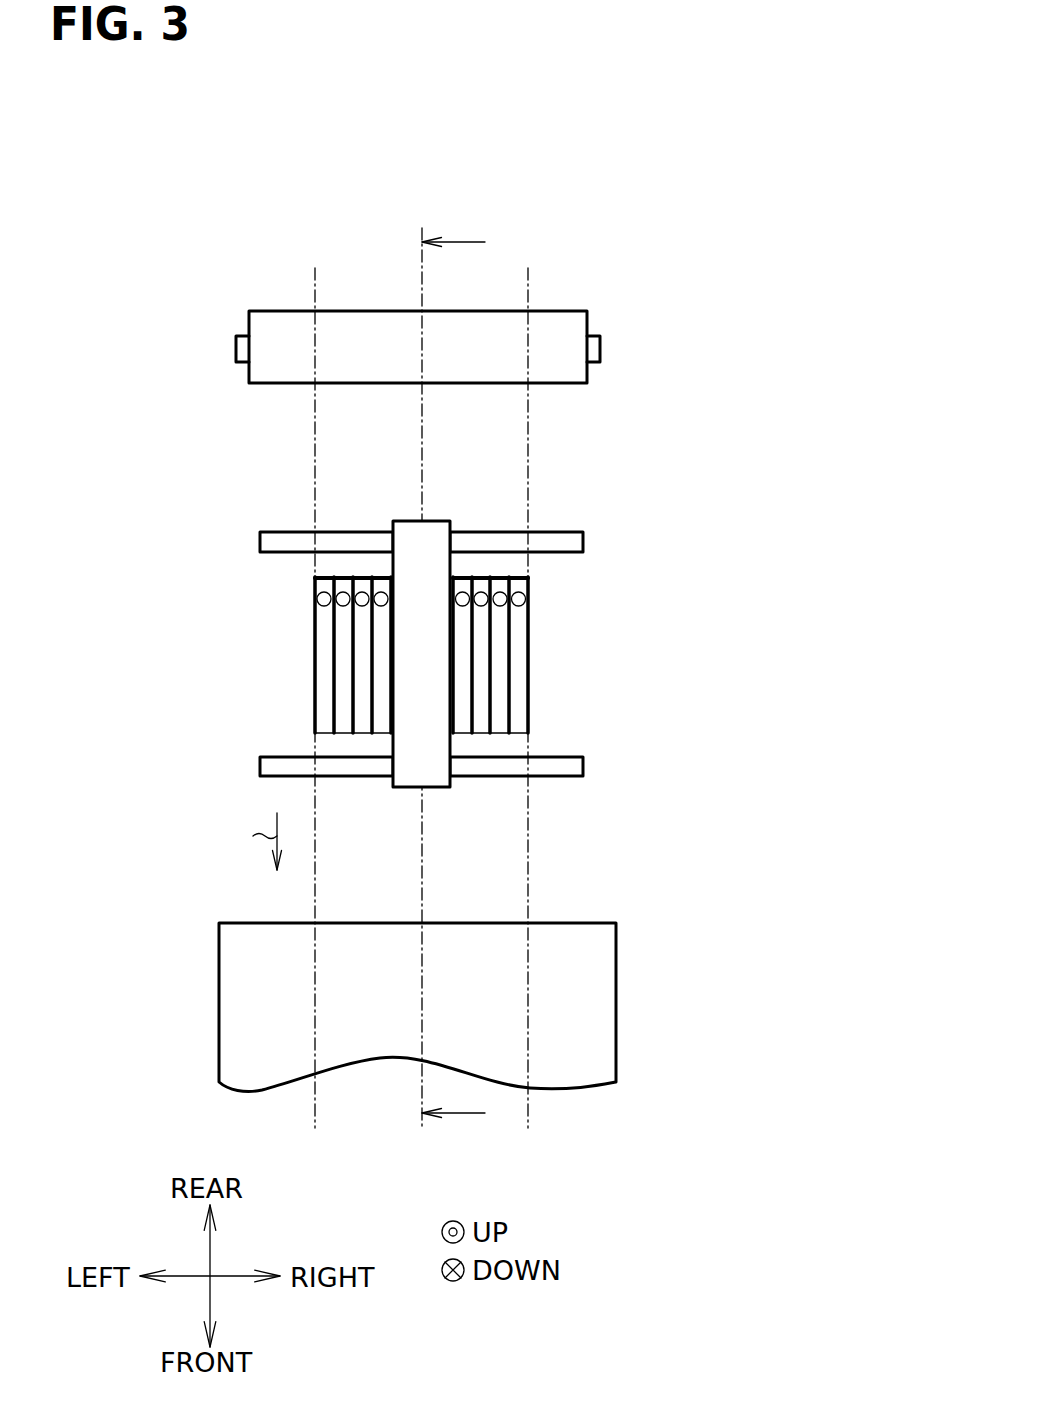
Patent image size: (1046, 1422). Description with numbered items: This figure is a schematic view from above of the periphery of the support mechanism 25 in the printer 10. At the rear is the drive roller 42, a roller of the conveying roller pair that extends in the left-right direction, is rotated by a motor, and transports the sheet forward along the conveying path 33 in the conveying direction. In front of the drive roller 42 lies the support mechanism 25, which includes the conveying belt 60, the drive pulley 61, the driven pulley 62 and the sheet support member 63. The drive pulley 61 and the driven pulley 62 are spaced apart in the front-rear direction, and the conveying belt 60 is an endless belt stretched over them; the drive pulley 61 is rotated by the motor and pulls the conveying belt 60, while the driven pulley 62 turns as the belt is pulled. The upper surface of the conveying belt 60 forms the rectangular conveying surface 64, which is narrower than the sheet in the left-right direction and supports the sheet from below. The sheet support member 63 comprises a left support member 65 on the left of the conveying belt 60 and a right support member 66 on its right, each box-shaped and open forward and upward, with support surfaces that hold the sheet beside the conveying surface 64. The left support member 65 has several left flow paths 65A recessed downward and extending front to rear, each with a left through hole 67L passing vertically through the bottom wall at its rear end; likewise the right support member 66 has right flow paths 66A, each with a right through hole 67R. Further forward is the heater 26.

The printer 10 is at (812, 173).
The support mechanism 25 is at (703, 657).
The heater 26 is at (636, 908).
The conveying path 33 is at (528, 843).
The drive roller 42 is at (592, 320).
The conveying belt 60 is at (421, 666).
The drive pulley 61 is at (455, 783).
The driven pulley 62 is at (453, 557).
The sheet support member 63 is at (423, 675).
The conveying surface 64 is at (405, 745).
The left support member 65 is at (268, 660).
The left flow path 65A is at (380, 646).
The right support member 66 is at (577, 662).
The right flow path 66A is at (463, 646).
The left through hole 67L is at (381, 606).
The right through hole 67R is at (462, 606).